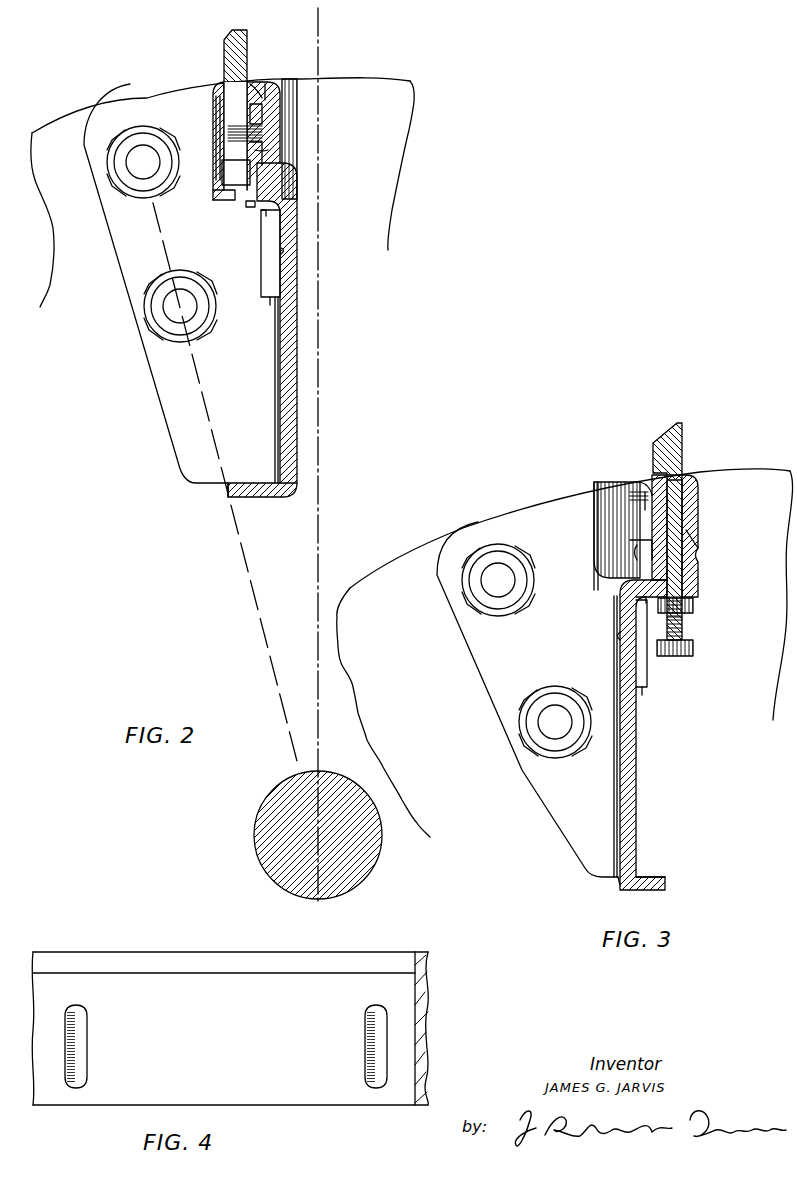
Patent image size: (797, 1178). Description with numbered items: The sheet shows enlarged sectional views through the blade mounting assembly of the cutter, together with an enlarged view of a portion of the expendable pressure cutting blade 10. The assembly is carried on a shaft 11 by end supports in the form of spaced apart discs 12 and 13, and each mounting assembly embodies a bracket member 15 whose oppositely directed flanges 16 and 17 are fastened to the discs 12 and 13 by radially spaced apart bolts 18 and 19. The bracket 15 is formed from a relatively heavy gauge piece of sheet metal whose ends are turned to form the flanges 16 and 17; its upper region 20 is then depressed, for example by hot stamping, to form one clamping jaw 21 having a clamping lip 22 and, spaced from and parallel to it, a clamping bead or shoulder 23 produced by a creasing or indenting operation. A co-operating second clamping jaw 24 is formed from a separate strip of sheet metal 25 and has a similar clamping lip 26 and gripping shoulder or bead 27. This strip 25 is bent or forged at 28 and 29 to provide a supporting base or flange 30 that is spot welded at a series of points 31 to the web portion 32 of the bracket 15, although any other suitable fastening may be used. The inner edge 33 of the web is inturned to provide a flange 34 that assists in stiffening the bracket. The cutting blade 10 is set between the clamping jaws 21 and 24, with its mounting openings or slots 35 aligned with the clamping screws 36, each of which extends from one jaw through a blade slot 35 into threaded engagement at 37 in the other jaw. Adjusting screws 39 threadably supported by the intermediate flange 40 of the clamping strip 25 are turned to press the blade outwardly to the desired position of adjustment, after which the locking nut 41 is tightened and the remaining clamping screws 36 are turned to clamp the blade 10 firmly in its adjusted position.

In FIG. 2, the pressure cutting blade 10 is at (242, 56).
In FIG. 3, the pressure cutting blade 10 is at (685, 448).
In FIG. 4, the pressure cutting blade 10 is at (291, 1100).
In FIG. 2, the shaft 11 is at (270, 851).
In FIG. 2, the disc 12 is at (344, 80).
In FIG. 3, the disc 13 is at (748, 470).
In FIG. 2, the bracket member 15 is at (299, 342).
In FIG. 3, the bracket member 15 is at (636, 744).
In FIG. 2, the flange 16 is at (148, 100).
In FIG. 3, the flange 17 is at (546, 497).
In FIG. 2, the bolt 18 is at (137, 152).
In FIG. 3, the bolt 19 is at (508, 580).
In FIG. 2, the upper region 20 is at (309, 162).
In FIG. 3, the upper region 20 is at (602, 519).
In FIG. 2, the clamping jaw 21 is at (272, 88).
In FIG. 3, the clamping jaw 21 is at (652, 490).
In FIG. 2, the clamping lip 22 is at (256, 84).
In FIG. 3, the clamping lip 22 is at (668, 482).
In FIG. 2, the clamping bead or shoulder 23 is at (264, 156).
In FIG. 3, the clamping bead or shoulder 23 is at (652, 545).
In FIG. 2, the second clamping jaw 24 is at (201, 91).
In FIG. 3, the second clamping jaw 24 is at (709, 492).
In FIG. 2, the strip of sheet metal 25 is at (268, 299).
In FIG. 3, the strip of sheet metal 25 is at (645, 688).
In FIG. 2, the clamping lip 26 is at (221, 88).
In FIG. 2, the gripping shoulder or bead 27 is at (222, 163).
In FIG. 3, the gripping shoulder or bead 27 is at (700, 548).
In FIG. 2, the bend 28 is at (216, 192).
In FIG. 3, the bend 28 is at (701, 592).
In FIG. 2, the bend 29 is at (263, 218).
In FIG. 3, the bend 29 is at (640, 599).
In FIG. 2, the supporting base or flange 30 is at (263, 280).
In FIG. 3, the supporting base or flange 30 is at (650, 672).
In FIG. 2, the spot weld points 31 is at (284, 252).
In FIG. 3, the spot weld points 31 is at (622, 637).
In FIG. 2, the web portion 32 is at (297, 292).
In FIG. 3, the web portion 32 is at (618, 672).
In FIG. 2, the inner edge 33 is at (295, 489).
In FIG. 3, the inner edge 33 is at (616, 881).
In FIG. 2, the flange 34 is at (263, 496).
In FIG. 3, the flange 34 is at (652, 876).
In FIG. 4, the mounting slot 35 is at (82, 1048).
In FIG. 2, the clamping screw 36 is at (264, 131).
In FIG. 3, the clamping screw 36 is at (630, 490).
In FIG. 2, the threaded engagement 37 is at (264, 118).
In FIG. 3, the adjusting screw 39 is at (690, 630).
In FIG. 2, the intermediate flange 40 is at (248, 210).
In FIG. 3, the locking nut 41 is at (696, 606).